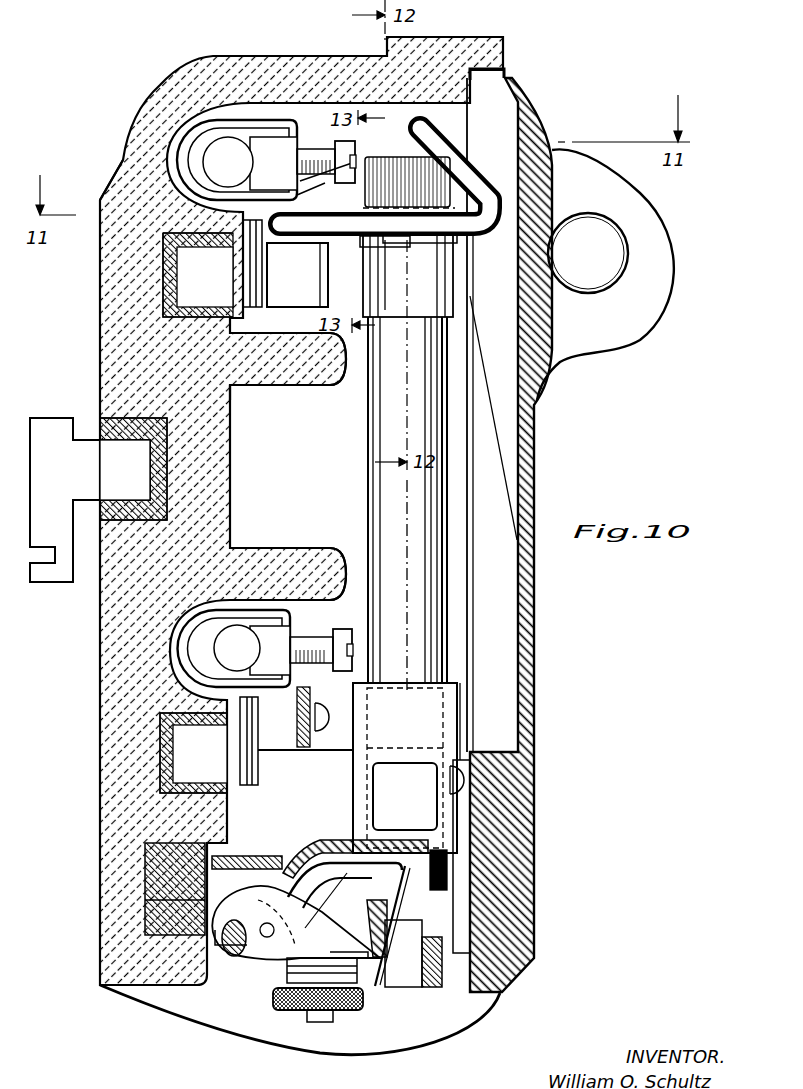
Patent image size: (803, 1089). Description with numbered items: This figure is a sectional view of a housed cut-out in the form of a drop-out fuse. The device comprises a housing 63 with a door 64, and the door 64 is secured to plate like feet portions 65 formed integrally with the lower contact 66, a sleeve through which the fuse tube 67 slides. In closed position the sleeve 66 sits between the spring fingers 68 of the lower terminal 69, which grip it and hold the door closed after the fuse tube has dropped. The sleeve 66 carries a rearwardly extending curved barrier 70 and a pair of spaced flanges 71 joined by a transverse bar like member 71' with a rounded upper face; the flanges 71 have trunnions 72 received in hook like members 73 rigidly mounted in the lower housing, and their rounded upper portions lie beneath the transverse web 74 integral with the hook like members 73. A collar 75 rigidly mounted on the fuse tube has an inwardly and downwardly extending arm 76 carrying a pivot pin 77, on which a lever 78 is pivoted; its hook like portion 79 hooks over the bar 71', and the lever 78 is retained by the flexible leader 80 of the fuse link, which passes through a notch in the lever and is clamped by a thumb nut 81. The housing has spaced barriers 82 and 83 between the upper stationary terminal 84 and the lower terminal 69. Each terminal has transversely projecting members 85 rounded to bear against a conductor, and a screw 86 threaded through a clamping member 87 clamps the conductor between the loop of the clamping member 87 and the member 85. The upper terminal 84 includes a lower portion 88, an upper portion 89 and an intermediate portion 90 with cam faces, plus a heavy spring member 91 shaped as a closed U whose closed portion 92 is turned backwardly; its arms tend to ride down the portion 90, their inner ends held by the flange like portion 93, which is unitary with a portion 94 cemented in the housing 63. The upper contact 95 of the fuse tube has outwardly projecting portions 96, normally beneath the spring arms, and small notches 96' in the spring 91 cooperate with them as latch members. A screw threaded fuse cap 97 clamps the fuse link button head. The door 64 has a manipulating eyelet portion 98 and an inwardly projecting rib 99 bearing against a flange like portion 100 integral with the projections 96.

The housing 63 is at (100, 732).
The door 64 is at (533, 775).
The plate like feet portions 65 is at (470, 825).
The lower contact 66 is at (353, 770).
The fuse tube 67 is at (368, 492).
The spring fingers 68 is at (318, 755).
The lower terminal 69 is at (280, 760).
The barrier 70 is at (325, 862).
The flanges 71 is at (247, 849).
The bar like member 71' is at (229, 963).
The trunnions 72 is at (295, 985).
The hook like members 73 is at (340, 988).
The transverse web 74 is at (310, 848).
The collar 75 is at (460, 866).
The arm 76 is at (382, 900).
The pivot pin 77 is at (262, 947).
The lever 78 is at (386, 932).
The hook like portion 79 is at (145, 890).
The flexible leader 80 is at (378, 980).
The thumb nut 81 is at (285, 1055).
The barrier 82 is at (292, 568).
The barrier 83 is at (315, 385).
The upper stationary terminal 84 is at (290, 340).
The transversely extending projecting members 85 is at (248, 150).
The screw 86 is at (325, 148).
The clamping member 87 is at (210, 125).
The lower portion 88 is at (286, 290).
The upper portion 89 is at (302, 200).
The intermediate portion 90 is at (297, 242).
The heavy spring member 91 is at (352, 232).
The closed portion of the U 92 is at (448, 145).
The flange like portion 93 is at (135, 190).
The portion secured in housing 94 is at (190, 285).
The upper contact 95 is at (405, 320).
The outwardly projecting portions 96 is at (408, 275).
The notches 96' is at (392, 275).
The fuse cap 97 is at (376, 157).
The manipulating eyelet portion 98 is at (618, 343).
The rib 99 is at (455, 275).
The flange like portion 100 is at (458, 238).